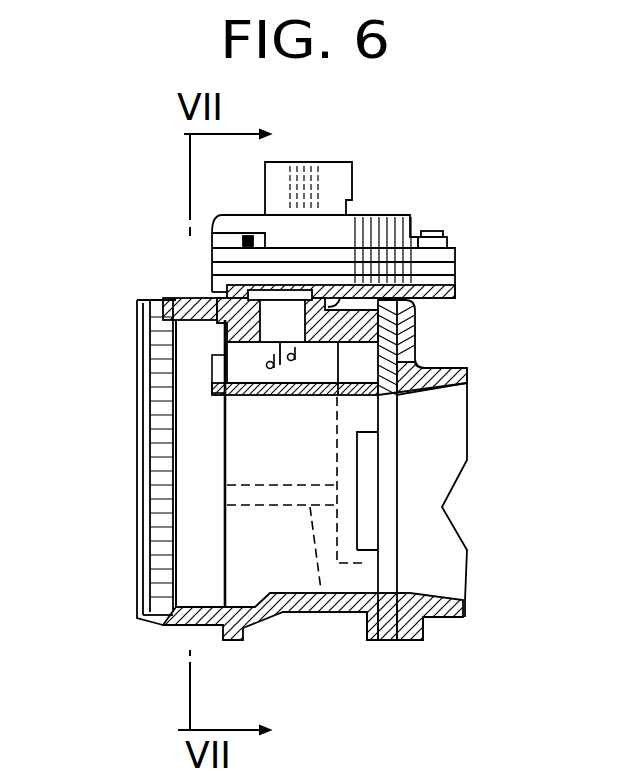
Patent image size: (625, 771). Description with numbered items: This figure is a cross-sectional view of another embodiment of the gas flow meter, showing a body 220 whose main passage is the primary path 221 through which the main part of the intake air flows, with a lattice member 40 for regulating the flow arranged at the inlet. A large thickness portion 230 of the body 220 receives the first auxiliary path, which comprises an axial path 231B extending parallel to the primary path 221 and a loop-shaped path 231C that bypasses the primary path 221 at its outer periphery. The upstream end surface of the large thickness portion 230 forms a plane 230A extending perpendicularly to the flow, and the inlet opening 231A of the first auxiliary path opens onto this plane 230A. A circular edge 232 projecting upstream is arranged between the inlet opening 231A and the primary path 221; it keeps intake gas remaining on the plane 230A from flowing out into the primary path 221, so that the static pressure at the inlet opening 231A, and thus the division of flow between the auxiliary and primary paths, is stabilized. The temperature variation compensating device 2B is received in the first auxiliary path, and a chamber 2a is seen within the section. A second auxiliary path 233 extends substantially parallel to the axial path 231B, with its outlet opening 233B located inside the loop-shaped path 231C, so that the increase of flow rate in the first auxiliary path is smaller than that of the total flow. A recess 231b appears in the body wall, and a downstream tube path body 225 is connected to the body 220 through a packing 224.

The large thickness portion 230 is at (213, 290).
The body 220 is at (182, 298).
The lattice member 40 is at (163, 330).
The plane 230A is at (215, 340).
The inlet opening 231A is at (222, 390).
The circular edge 232 is at (212, 432).
The chamber 2a is at (193, 575).
The axial path 231B is at (320, 370).
The temperature variation compensating device 2B is at (293, 357).
The tube path body 225 is at (418, 322).
The loop-shaped path 231C is at (370, 370).
The recess 231b is at (367, 474).
The outlet opening 233B is at (340, 505).
The second auxiliary path 233 is at (322, 592).
The packing 224 is at (385, 641).
The primary path 221 is at (262, 560).